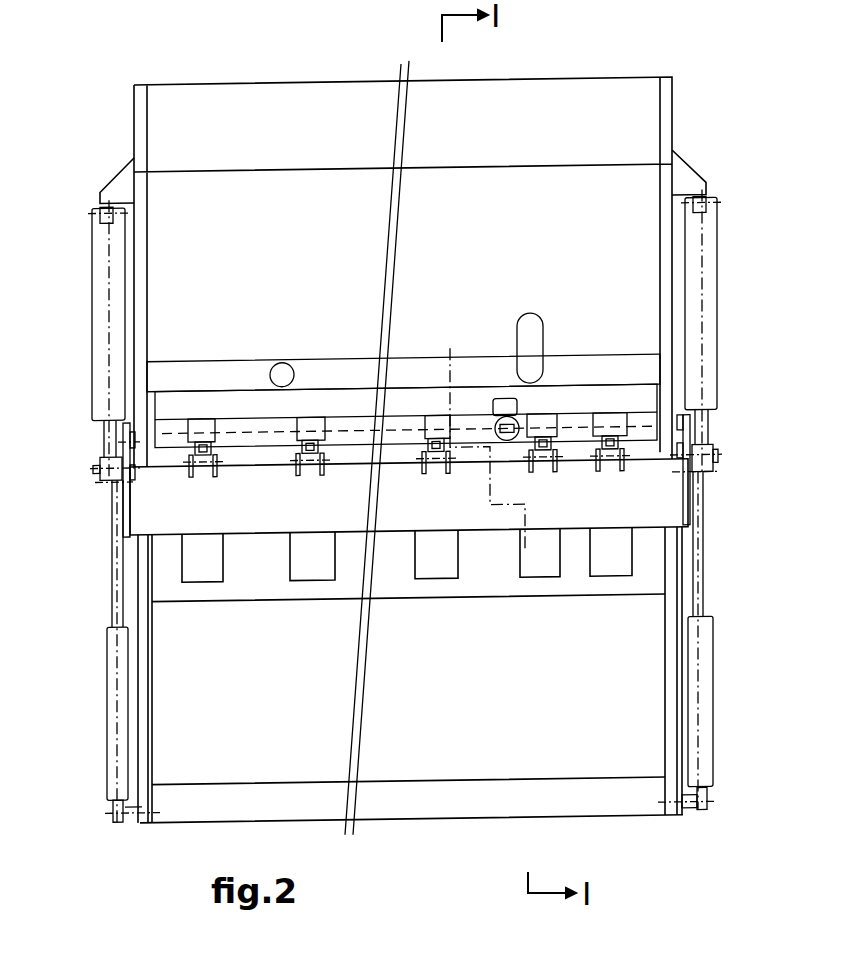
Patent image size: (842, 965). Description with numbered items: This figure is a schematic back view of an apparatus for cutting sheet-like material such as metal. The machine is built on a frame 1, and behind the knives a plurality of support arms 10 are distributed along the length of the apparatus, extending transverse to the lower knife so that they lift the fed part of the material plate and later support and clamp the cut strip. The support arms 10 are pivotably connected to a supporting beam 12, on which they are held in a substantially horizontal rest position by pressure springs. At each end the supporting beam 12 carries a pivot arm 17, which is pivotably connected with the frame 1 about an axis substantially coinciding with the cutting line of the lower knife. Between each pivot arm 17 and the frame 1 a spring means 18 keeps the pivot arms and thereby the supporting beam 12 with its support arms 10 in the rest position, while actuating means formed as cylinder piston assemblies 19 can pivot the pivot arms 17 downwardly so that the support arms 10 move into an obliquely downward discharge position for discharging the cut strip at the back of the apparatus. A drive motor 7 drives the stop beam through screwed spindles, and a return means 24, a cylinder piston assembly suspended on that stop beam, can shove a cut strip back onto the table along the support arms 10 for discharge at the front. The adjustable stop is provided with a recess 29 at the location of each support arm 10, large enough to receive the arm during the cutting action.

The frame 1 is at (143, 729).
The drive motor 7 is at (529, 319).
The support arms 10 is at (293, 452).
The supporting beam 12 is at (150, 518).
The pivot arms 17 is at (127, 508).
The spring means 18 is at (107, 683).
The cylinder piston assemblies 19 is at (97, 285).
The return means 24 is at (497, 426).
The recess 29 is at (307, 430).